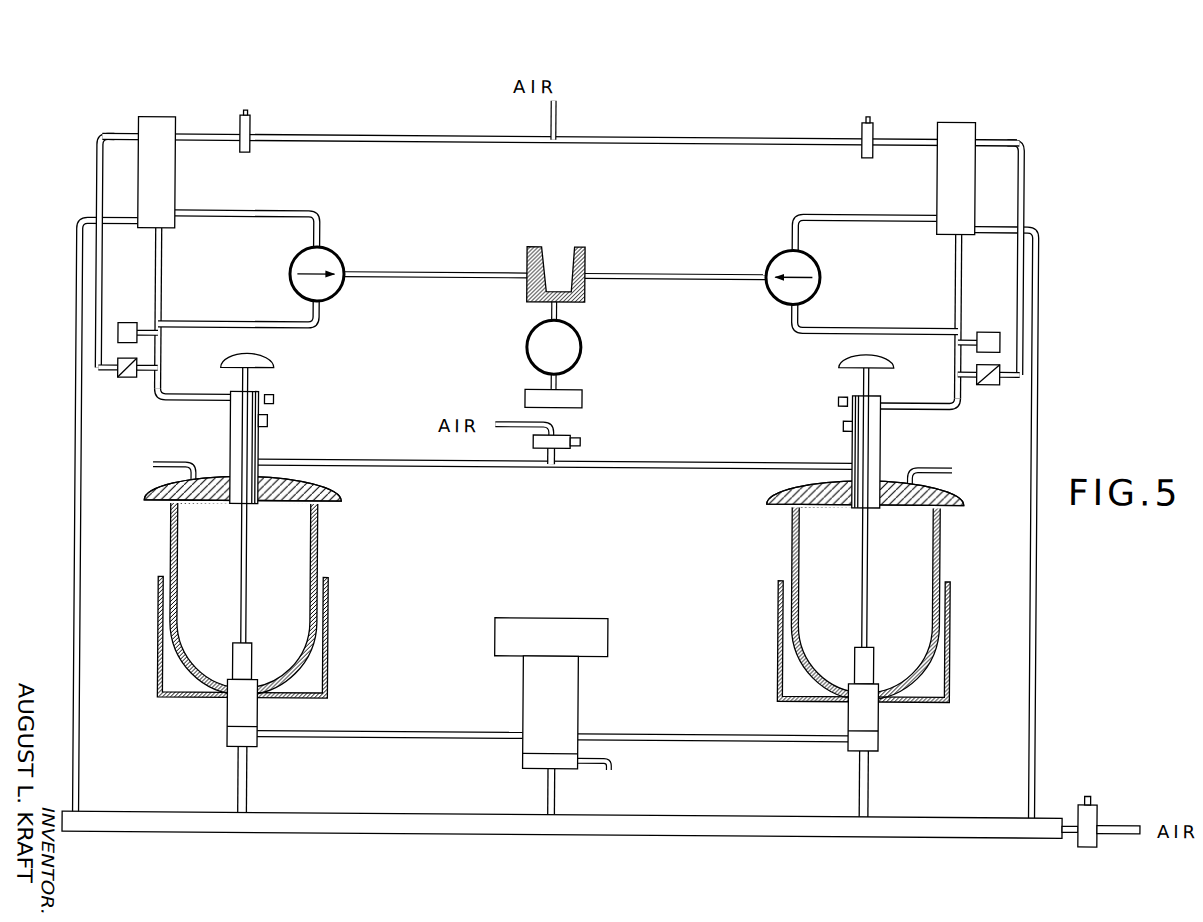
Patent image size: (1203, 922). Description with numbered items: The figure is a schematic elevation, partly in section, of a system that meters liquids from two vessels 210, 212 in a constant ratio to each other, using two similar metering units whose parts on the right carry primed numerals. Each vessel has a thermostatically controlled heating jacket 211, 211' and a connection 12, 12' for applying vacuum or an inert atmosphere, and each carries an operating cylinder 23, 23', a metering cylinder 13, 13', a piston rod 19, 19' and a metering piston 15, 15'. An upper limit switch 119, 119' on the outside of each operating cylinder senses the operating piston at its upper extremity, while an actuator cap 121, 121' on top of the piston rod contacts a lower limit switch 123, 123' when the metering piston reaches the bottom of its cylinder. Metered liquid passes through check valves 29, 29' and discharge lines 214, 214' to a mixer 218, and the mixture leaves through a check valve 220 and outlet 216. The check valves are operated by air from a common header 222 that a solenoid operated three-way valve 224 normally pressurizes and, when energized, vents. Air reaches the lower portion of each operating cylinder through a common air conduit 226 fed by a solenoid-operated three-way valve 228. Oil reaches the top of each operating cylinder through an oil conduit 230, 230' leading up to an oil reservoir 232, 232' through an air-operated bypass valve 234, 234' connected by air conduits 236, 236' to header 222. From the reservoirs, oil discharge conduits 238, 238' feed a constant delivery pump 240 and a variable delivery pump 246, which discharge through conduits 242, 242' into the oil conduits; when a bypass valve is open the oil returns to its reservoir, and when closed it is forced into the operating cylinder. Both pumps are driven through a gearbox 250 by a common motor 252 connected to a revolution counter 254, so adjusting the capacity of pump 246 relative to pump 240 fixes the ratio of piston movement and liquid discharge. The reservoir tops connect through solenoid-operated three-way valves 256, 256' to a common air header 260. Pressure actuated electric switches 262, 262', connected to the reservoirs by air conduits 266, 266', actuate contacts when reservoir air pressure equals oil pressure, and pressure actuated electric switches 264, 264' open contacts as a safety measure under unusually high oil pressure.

The connection 12 is at (173, 461).
The connection 12' is at (939, 465).
The metering cylinder 13 is at (276, 713).
The metering cylinder 13' is at (885, 718).
The metering piston 15 is at (263, 649).
The metering piston 15' is at (888, 654).
The piston rod 19 is at (266, 505).
The piston rod 19' is at (891, 508).
The operating cylinder 23 is at (276, 447).
The operating cylinder 23' is at (838, 451).
The check valve 29 is at (217, 774).
The check valve 29' is at (898, 779).
The upper limit switch 119 is at (294, 409).
The upper limit switch 119' is at (820, 415).
The actuator cap 121 is at (272, 350).
The actuator cap 121' is at (839, 350).
The lower limit switch 123 is at (294, 378).
The lower limit switch 123' is at (816, 382).
The vessel 210 is at (318, 539).
The vessel 212 is at (940, 555).
The heating jacket 211 is at (274, 637).
The heating jacket 211' is at (895, 642).
The discharge line 214 is at (390, 758).
The discharge line 214' is at (713, 723).
The outlet 216 is at (617, 764).
The mixer 218 is at (603, 638).
The check valve 220 is at (522, 762).
The common header 222 is at (436, 830).
The solenoid operated 3-way valve 224 is at (1098, 807).
The common air conduit 226 is at (399, 471).
The solenoid-operated 3-way valve 228 is at (566, 434).
The oil conduit 230 is at (193, 412).
The oil conduit 230' is at (918, 389).
The oil reservoir 232 is at (117, 157).
The oil reservoir 232' is at (946, 157).
The bypass valve 234 is at (186, 308).
The bypass valve 234' is at (923, 313).
The air conduit 236 is at (78, 516).
The air conduit 236' is at (1041, 525).
The oil discharge conduit 238 is at (245, 243).
The oil discharge conduit 238' is at (866, 230).
The constant delivery pump 240 is at (347, 252).
The conduit 242 is at (237, 299).
The conduit 242' is at (877, 304).
The variable delivery pump 246 is at (772, 256).
The gearbox 250 is at (559, 257).
The common motor 252 is at (581, 348).
The revolution counter 254 is at (582, 393).
The solenoid-operated 3-way valve 256 is at (219, 119).
The solenoid-operated 3-way valve 256' is at (848, 119).
The common air header 260 is at (341, 139).
The pressure actuated electric switch 262 is at (123, 389).
The pressure actuated electric switch 262' is at (988, 398).
The pressure actuated electric switch 264 is at (132, 315).
The pressure actuated electric switch 264' is at (985, 323).
The air conduit 266 is at (57, 227).
The air conduit 266' is at (1017, 227).